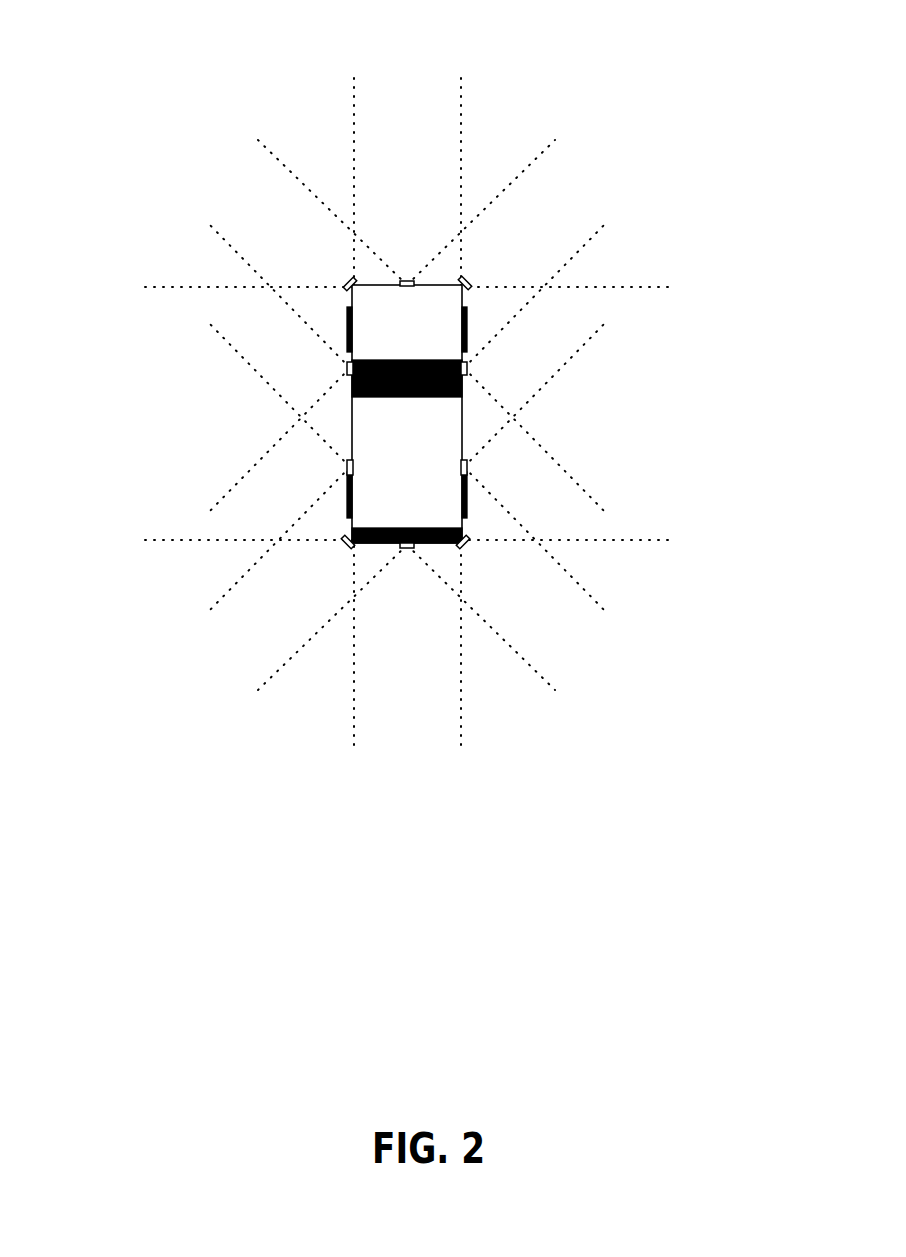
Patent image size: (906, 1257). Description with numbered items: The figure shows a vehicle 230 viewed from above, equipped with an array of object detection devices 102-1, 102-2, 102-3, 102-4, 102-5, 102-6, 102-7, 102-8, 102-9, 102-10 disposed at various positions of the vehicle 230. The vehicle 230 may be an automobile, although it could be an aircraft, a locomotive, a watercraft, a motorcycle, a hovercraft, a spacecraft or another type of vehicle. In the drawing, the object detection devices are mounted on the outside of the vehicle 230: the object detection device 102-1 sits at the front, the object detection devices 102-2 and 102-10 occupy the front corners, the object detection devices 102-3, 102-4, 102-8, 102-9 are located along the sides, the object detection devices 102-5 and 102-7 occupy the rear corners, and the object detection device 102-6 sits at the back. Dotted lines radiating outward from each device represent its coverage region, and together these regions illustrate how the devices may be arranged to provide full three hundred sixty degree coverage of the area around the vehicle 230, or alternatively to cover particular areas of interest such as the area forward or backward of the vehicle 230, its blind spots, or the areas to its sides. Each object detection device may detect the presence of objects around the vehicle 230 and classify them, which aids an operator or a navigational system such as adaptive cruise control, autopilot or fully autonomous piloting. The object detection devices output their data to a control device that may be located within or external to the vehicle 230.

The object detection device 102-1 is at (407, 266).
The object detection device 102-2 is at (480, 272).
The object detection device 102-3 is at (483, 370).
The object detection device 102-4 is at (481, 475).
The object detection device 102-5 is at (480, 557).
The object detection device 102-6 is at (408, 564).
The object detection device 102-7 is at (334, 558).
The object detection device 102-8 is at (333, 476).
The object detection device 102-9 is at (332, 369).
The object detection device 102-10 is at (334, 272).
The vehicle 230 is at (482, 327).